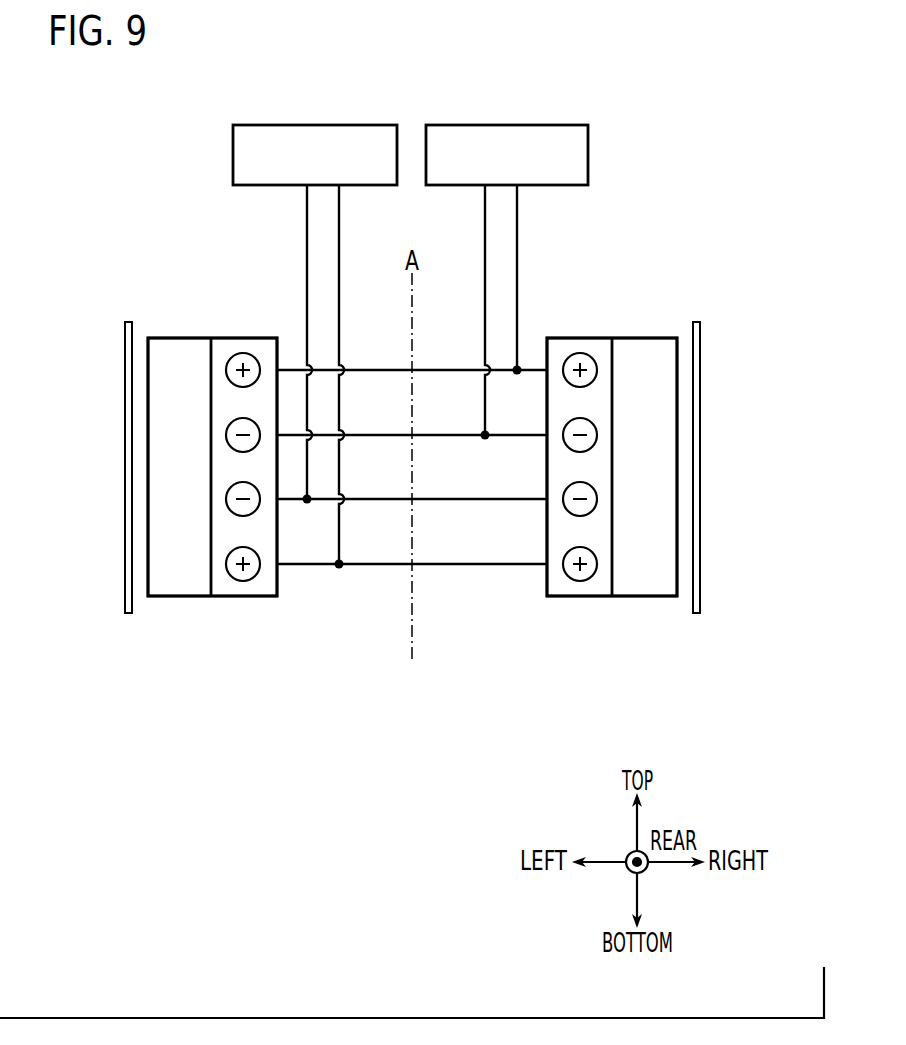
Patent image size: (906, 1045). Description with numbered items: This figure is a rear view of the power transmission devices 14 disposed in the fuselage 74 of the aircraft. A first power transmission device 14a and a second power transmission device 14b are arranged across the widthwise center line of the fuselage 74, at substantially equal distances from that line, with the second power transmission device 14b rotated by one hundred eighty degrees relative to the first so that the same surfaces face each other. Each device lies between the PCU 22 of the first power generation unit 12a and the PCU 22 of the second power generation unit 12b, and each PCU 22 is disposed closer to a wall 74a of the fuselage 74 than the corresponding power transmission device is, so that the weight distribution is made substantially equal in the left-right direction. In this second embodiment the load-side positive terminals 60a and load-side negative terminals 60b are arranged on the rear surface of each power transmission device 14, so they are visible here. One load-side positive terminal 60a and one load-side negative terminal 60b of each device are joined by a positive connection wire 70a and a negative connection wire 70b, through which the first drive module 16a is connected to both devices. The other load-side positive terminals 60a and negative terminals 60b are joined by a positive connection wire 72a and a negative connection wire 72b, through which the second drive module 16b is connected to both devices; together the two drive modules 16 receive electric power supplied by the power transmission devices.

The drive module 16 is at (410, 131).
The first drive module 16a is at (283, 124).
The second drive module 16b is at (461, 124).
The power transmission device 14 is at (412, 515).
The first power transmission device 14a is at (242, 600).
The second power transmission device 14b is at (580, 600).
The power control unit (PCU) 22 is at (414, 467).
The first power generation unit 12a is at (158, 470).
The second power generation unit 12b is at (665, 418).
The load-side positive terminal 60a is at (226, 372).
The load-side negative terminal 60b is at (226, 437).
The positive connection wire 72a is at (440, 368).
The negative connection wire 72b is at (440, 433).
The positive connection wire 70a is at (448, 562).
The negative connection wire 70b is at (448, 497).
The fuselage 74 is at (395, 467).
The wall 74a is at (125, 397).